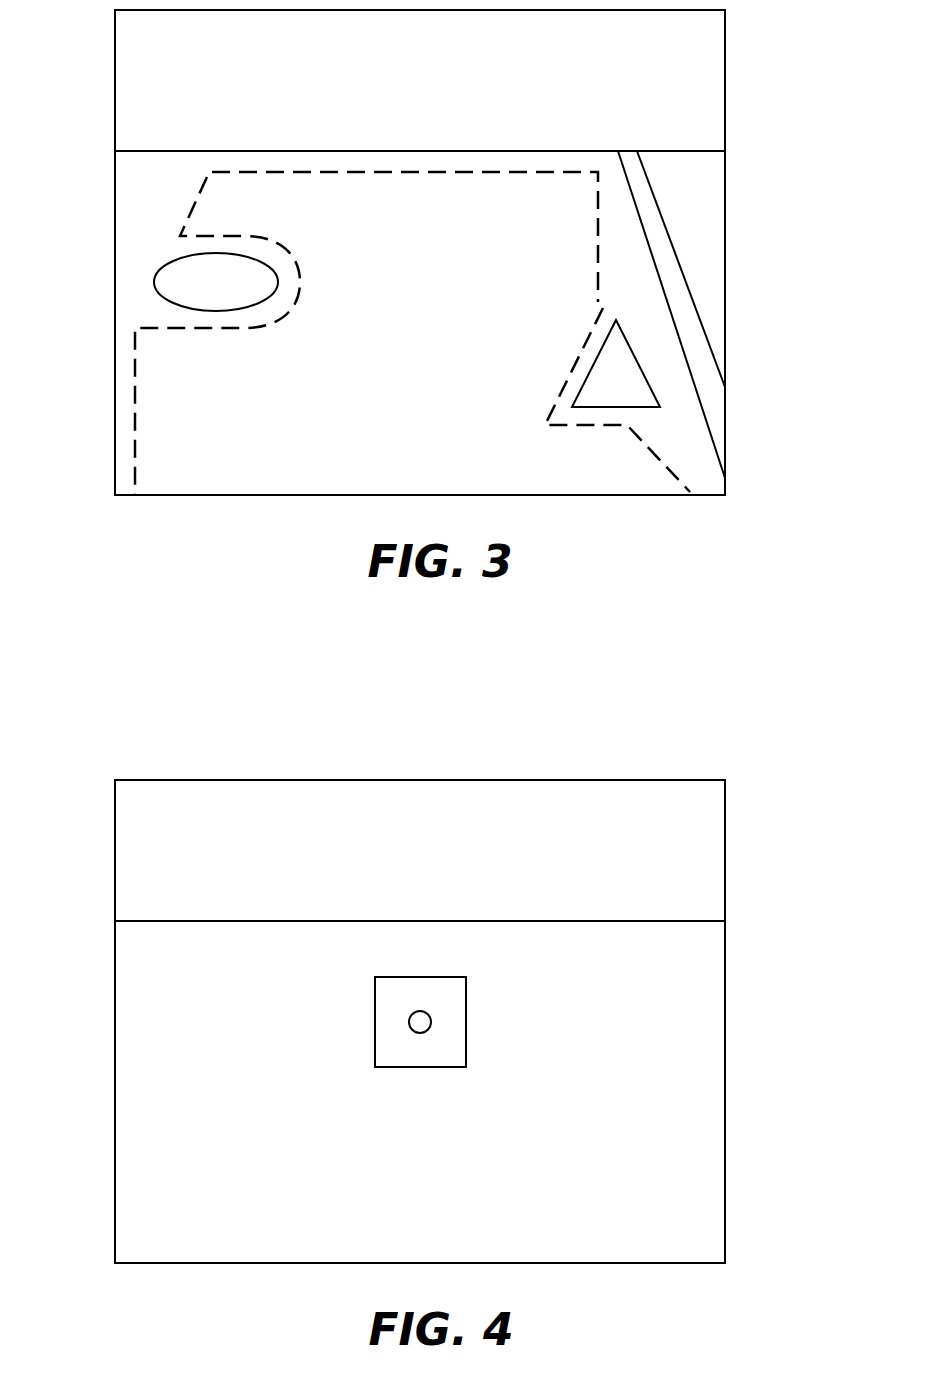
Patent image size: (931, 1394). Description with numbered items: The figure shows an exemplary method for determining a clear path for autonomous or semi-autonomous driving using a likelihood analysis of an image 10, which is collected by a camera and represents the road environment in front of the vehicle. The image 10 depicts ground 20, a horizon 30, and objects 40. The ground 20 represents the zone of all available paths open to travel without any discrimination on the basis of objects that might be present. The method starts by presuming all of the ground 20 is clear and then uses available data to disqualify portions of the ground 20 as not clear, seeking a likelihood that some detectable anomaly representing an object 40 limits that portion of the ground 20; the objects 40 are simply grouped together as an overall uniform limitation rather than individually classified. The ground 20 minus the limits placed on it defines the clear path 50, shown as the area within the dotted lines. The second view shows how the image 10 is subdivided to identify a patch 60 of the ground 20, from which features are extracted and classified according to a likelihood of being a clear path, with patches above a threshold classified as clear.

In FIG. 3, the image 10 is at (218, 202).
In FIG. 4, the image 10 is at (660, 853).
In FIG. 3, the ground 20 is at (569, 202).
In FIG. 3, the horizon 30 is at (667, 153).
In FIG. 4, the horizon 30 is at (665, 921).
In FIG. 3, the objects 40 is at (663, 247).
In FIG. 4, the objects 40 is at (424, 1026).
In FIG. 3, the clear path 50 is at (401, 271).
In FIG. 4, the patch 60 is at (455, 1000).